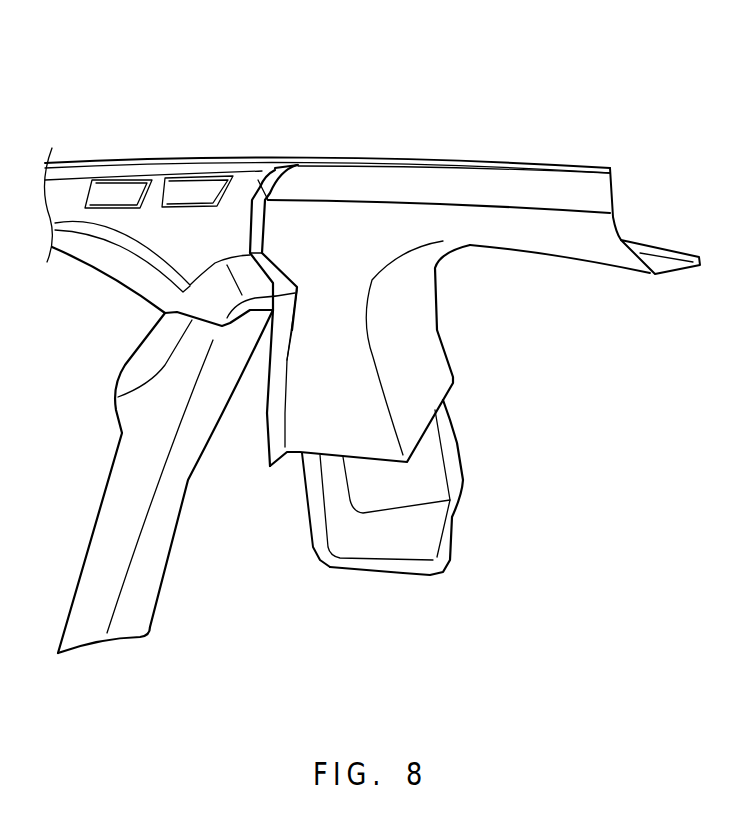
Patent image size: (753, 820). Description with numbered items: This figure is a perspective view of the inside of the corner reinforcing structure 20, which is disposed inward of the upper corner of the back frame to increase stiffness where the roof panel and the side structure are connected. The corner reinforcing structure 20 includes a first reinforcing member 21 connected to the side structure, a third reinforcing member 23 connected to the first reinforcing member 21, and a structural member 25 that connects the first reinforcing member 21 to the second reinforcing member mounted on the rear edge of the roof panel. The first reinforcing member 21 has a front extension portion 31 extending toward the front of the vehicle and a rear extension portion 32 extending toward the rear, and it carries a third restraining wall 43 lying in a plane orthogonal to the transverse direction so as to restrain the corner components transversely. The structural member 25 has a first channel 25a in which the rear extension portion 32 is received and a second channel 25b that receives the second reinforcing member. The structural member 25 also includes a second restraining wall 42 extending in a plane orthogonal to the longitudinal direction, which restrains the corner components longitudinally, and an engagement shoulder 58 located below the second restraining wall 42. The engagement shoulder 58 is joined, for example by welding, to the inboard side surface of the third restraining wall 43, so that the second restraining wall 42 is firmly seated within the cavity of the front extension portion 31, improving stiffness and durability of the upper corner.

The corner reinforcing structure 20 is at (46, 46).
The first reinforcing member 21 is at (82, 264).
The third reinforcing member 23 is at (166, 596).
The structural member 25 is at (444, 308).
The first channel 25a is at (333, 437).
The second channel 25b is at (605, 255).
The front extension portion 31 is at (98, 162).
The rear extension portion 32 is at (448, 515).
The second restraining wall 42 is at (260, 187).
The third restraining wall 43 is at (227, 321).
The engagement shoulder 58 is at (282, 277).